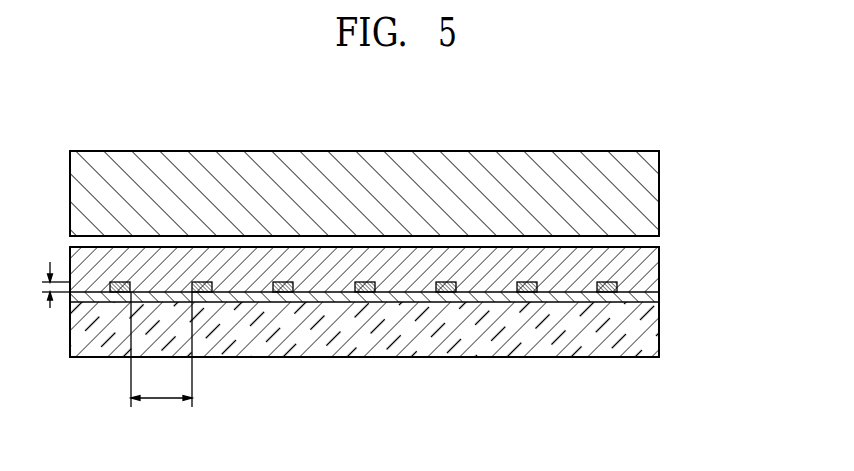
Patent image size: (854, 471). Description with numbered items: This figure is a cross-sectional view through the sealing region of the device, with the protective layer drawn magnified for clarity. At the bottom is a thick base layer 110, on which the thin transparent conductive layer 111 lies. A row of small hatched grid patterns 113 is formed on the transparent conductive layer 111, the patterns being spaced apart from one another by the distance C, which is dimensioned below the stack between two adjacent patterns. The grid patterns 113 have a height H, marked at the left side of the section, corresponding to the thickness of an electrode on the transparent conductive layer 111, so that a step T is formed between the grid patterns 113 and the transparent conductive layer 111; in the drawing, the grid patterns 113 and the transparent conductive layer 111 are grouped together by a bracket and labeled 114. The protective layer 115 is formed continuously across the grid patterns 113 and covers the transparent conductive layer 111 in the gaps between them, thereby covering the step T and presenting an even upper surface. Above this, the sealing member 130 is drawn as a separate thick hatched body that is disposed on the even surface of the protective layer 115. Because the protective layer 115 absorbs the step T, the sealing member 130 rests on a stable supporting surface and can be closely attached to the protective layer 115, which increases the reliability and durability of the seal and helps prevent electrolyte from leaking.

The substrate 110 is at (647, 328).
The transparent conductive layer 111 is at (653, 298).
The grid patterns 113 is at (643, 290).
The electrode layer 114 is at (737, 290).
The protective layer 115 is at (635, 275).
The sealing member 130 is at (648, 192).
The height H is at (49, 285).
The distance C is at (161, 349).
The step T is at (242, 283).